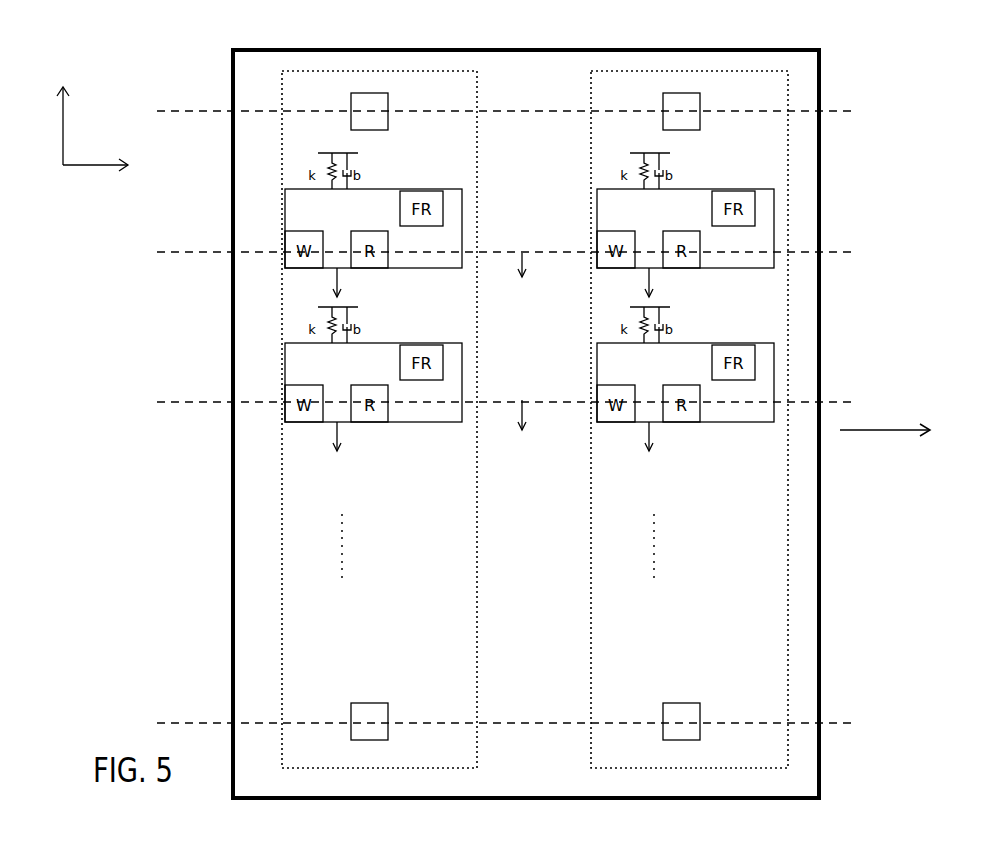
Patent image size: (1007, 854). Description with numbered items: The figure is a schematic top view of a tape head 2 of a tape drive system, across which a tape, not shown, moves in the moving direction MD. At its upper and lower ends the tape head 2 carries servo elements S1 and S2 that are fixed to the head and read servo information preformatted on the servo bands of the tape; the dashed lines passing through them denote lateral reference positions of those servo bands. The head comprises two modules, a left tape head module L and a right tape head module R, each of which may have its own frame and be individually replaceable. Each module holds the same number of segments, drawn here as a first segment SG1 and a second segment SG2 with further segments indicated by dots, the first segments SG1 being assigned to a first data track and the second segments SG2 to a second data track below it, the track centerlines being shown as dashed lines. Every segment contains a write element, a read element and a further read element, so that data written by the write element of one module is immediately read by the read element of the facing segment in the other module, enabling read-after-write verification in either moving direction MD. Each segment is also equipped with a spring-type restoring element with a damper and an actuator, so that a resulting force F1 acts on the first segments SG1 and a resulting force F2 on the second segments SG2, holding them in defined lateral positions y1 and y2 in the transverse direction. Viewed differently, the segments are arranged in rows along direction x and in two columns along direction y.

The tape head 2 is at (819, 617).
The left tape head module L is at (282, 637).
The right tape head module R is at (788, 513).
The moving direction MD is at (891, 409).
The first segment SG1 is at (595, 233).
The second segment SG2 is at (593, 378).
The servo element S1 is at (525, 111).
The servo element S2 is at (525, 721).
The resulting force F1 is at (468, 282).
The resulting force F2 is at (468, 438).
The lateral position of first segment y1 is at (534, 265).
The lateral position of second segment y2 is at (534, 415).
The direction x is at (117, 173).
The direction y is at (51, 117).